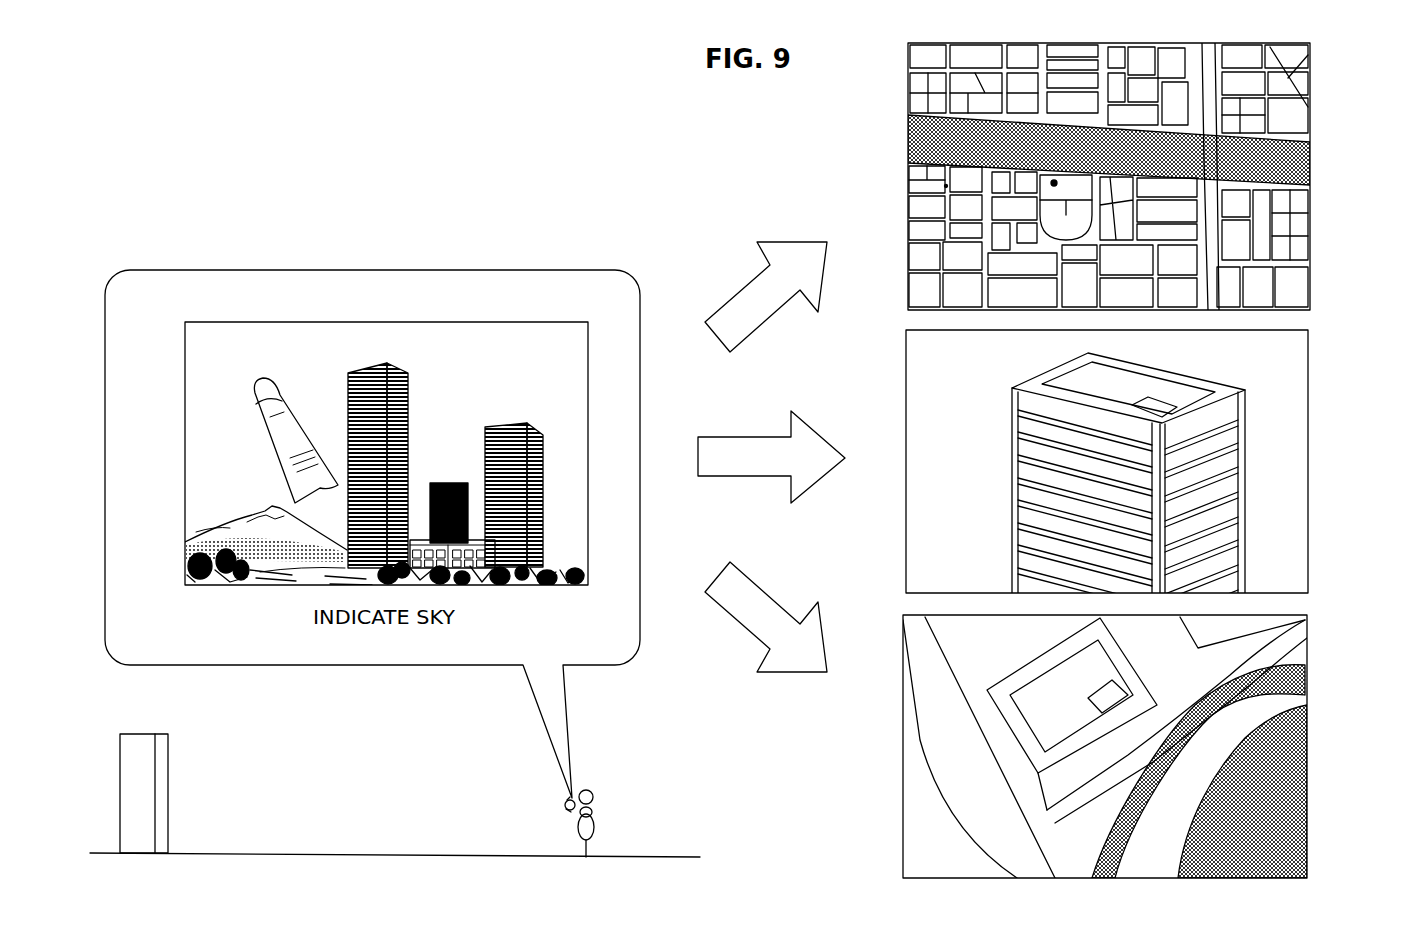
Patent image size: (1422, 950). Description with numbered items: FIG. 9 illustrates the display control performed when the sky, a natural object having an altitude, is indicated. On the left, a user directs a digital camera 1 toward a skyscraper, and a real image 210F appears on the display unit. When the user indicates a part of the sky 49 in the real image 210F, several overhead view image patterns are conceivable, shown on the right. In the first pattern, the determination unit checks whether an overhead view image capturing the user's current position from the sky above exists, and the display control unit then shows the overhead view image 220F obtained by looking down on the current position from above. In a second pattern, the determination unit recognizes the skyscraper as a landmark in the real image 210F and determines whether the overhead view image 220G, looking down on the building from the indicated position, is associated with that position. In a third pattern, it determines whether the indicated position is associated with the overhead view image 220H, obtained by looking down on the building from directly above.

The digital camera 1 is at (572, 810).
The part of the sky 49 is at (305, 352).
The real image 210F is at (447, 322).
The overhead view image 220F is at (1312, 175).
The overhead view image 220G is at (1309, 461).
The overhead view image 220H is at (1309, 745).